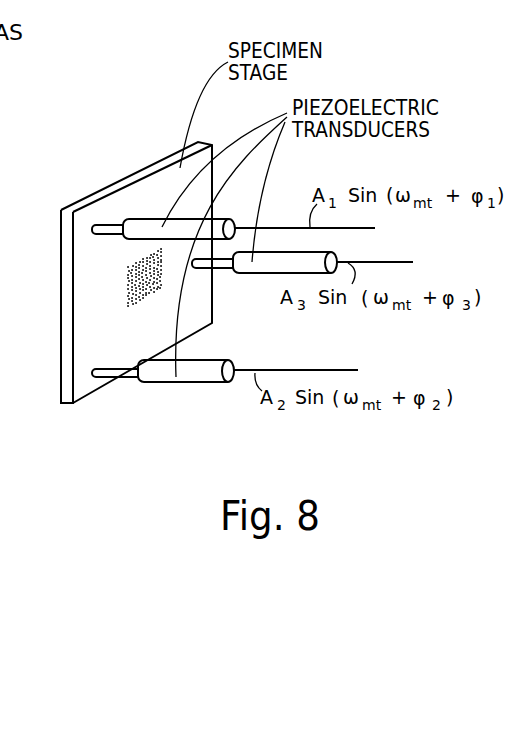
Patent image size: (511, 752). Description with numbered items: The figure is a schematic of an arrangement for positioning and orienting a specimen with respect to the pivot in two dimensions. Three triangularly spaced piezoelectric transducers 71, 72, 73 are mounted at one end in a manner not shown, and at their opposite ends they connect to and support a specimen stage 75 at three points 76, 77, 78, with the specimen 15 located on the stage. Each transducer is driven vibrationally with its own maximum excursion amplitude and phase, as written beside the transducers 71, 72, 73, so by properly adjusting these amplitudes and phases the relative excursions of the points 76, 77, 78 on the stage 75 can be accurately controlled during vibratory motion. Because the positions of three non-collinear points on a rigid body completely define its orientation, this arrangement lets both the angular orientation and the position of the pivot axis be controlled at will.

The specimen 15 is at (128, 282).
The piezoelectric transducer 71 is at (153, 226).
The piezoelectric transducer 72 is at (185, 378).
The piezoelectric transducer 73 is at (262, 273).
The specimen stage 75 is at (125, 337).
The connection point 76 is at (93, 226).
The connection point 77 is at (99, 380).
The connection point 78 is at (195, 269).